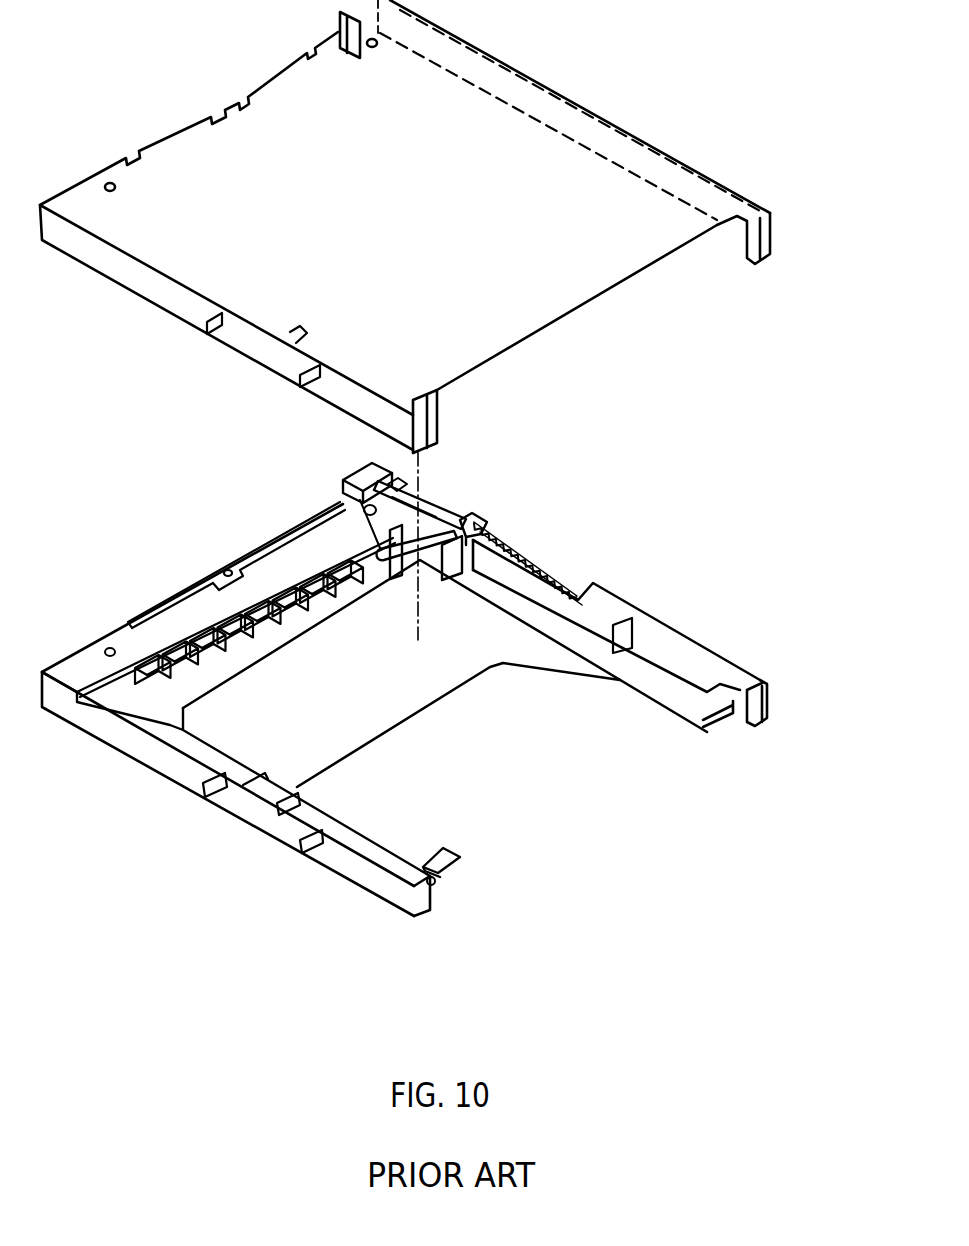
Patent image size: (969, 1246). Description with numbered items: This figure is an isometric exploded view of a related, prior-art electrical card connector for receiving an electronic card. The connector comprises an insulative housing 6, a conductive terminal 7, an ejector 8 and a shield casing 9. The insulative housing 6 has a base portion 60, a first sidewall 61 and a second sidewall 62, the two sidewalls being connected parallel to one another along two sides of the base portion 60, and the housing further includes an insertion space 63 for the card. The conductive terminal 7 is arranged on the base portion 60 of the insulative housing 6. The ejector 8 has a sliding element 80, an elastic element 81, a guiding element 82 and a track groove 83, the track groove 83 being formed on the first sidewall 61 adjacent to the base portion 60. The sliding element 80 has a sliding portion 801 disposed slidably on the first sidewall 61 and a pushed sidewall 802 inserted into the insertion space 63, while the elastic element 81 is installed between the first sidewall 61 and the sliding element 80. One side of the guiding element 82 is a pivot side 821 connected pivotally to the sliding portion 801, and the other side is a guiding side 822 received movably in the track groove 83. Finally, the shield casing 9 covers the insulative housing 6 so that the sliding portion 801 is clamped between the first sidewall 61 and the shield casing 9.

The insulative housing 6 is at (440, 722).
The base portion 60 is at (122, 640).
The first sidewall 61 is at (764, 706).
The second sidewall 62 is at (433, 893).
The insertion space 63 is at (553, 733).
The conductive terminal 7 is at (190, 624).
The ejector 8 is at (409, 539).
The sliding element 80 is at (480, 518).
The sliding portion 801 is at (470, 582).
The pushed sidewall 802 is at (391, 580).
The elastic element 81 is at (560, 572).
The guiding element 82 is at (441, 497).
The pivot side 821 is at (375, 523).
The guiding side 822 is at (390, 500).
The track groove 83 is at (405, 474).
The shield casing 9 is at (712, 141).